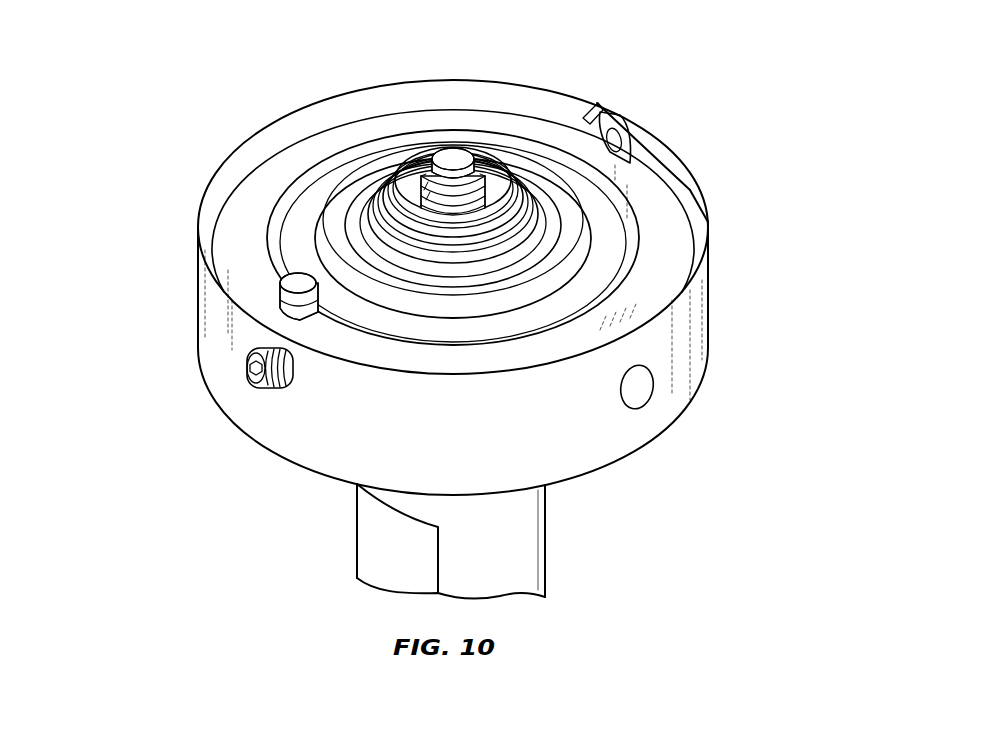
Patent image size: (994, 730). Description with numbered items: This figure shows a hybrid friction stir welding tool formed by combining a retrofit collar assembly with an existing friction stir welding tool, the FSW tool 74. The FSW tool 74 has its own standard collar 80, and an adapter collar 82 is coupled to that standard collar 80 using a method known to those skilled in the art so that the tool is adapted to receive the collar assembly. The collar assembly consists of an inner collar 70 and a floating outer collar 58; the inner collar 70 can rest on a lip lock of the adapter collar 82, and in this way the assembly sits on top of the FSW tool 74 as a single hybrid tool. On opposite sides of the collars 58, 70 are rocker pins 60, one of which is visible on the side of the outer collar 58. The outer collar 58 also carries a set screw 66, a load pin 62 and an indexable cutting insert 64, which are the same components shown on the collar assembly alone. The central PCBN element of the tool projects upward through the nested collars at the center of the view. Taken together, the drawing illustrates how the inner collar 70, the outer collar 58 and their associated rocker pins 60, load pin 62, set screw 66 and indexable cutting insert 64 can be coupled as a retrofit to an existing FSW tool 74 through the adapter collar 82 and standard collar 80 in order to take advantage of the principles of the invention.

The floating outer collar 58 is at (237, 234).
The rocker pins 60 is at (640, 384).
The load pin 62 is at (297, 283).
The indexable cutting insert 64 is at (617, 112).
The set screw 66 is at (253, 372).
The inner collar 70 is at (297, 217).
The FSW tool 74 is at (506, 185).
The standard collar 80 is at (353, 200).
The adapter collar 82 is at (345, 243).
The PCBN clamp screw PCBN is at (420, 158).